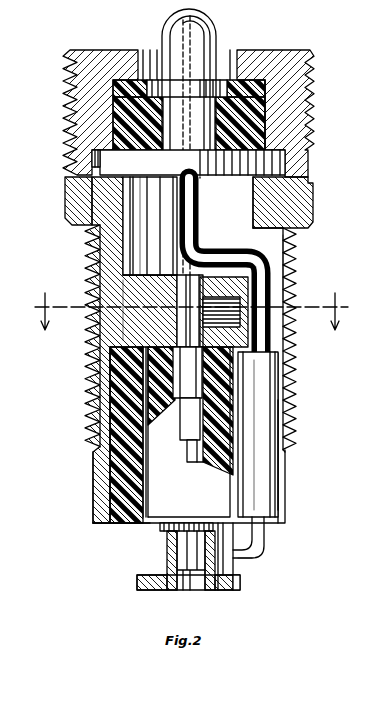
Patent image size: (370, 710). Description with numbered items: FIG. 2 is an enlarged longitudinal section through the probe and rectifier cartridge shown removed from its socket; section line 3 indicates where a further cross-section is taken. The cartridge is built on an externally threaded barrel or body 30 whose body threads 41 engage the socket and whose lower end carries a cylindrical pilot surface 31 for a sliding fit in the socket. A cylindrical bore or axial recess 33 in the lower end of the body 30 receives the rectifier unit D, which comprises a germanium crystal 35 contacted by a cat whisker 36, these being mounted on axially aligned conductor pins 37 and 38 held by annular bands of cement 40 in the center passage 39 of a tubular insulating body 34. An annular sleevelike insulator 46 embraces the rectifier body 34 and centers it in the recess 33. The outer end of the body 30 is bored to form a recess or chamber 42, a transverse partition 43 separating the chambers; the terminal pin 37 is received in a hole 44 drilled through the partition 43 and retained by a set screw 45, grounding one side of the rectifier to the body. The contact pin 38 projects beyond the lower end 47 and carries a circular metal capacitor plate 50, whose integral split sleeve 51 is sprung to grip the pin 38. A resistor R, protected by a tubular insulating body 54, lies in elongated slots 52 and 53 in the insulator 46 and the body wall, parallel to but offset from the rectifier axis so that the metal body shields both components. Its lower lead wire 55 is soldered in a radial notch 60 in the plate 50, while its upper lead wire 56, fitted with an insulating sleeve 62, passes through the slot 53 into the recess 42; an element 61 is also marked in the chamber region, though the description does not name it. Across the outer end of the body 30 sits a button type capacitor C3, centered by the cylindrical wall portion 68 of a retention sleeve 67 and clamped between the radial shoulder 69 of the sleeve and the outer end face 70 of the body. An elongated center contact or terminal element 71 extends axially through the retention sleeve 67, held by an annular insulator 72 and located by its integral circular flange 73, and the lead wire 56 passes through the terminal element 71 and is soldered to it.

The barrel or body 30 is at (97, 241).
The external cylindrical pilot surface 31 is at (93, 485).
The cylindrical bore or axial recess 33 is at (112, 458).
The insulating body 34 is at (162, 485).
The germanium pellet or semiconductor crystal 35 is at (187, 372).
The cat whisker 36 is at (190, 455).
The conductor post or pin 37 is at (184, 320).
The contact pin 38 is at (198, 468).
The center passage 39 is at (148, 368).
The annular band of cement 40 is at (232, 372).
The body threads 41 is at (92, 268).
The recess or chamber 42 is at (125, 213).
The transverse wall or partition 43 is at (154, 292).
The hole 44 is at (178, 270).
The set screw 45 is at (226, 260).
The annular sleevelike insulator 46 is at (122, 392).
The lower end 47 is at (100, 525).
The circular metal capacitor plate 50 is at (145, 586).
The tubular axially split sleeve 51 is at (167, 555).
The elongated slot 52 is at (264, 540).
The elongated slot 53 is at (293, 243).
The tubular insulating body 54 is at (277, 487).
The lead wire 55 is at (262, 552).
The lead wire 56 is at (272, 265).
The radial slot or notch 60 is at (237, 590).
The passage 61 is at (148, 226).
The insulating sleeve 62 is at (272, 328).
The retention sleeve 67 is at (68, 105).
The cylindrical wall portion 68 is at (100, 170).
The radial shoulder 69 is at (92, 158).
The outer end face 70 is at (92, 185).
The center contact or terminal element 71 is at (216, 42).
The annular insulator 72 is at (270, 108).
The circular flange 73 is at (170, 85).
The button type capacitor C3 is at (265, 140).
The rectifier unit D is at (189, 432).
The resistor R is at (270, 460).
The section line 3- 3 is at (189, 303).